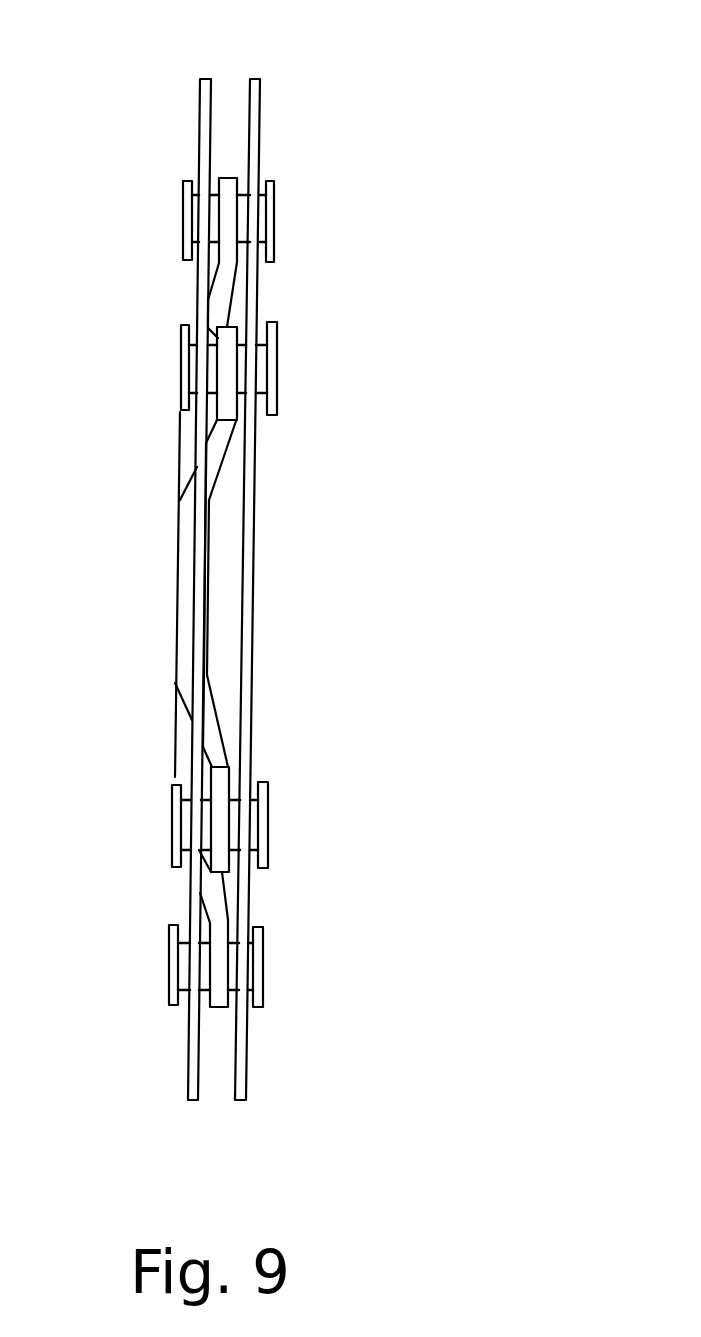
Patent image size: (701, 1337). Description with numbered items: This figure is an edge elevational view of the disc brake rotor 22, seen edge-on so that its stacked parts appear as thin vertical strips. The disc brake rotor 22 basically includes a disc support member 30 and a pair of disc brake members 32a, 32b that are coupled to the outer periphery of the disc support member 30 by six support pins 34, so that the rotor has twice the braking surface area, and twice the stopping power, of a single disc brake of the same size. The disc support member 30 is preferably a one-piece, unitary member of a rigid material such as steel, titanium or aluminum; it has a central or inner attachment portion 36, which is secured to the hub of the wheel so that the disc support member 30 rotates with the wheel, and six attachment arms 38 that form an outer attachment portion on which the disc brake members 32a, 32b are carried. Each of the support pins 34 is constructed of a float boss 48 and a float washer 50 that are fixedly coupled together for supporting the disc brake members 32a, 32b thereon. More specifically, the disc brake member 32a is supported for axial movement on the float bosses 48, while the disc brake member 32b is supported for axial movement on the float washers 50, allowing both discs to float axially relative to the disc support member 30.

The disc brake rotor 22 is at (447, 102).
The disc support member 30 is at (232, 172).
The disc brake member 32a is at (199, 120).
The disc brake member 32b is at (261, 99).
The support pin 34 is at (160, 213).
The inner attachment portion 36 is at (172, 708).
The attachment arm 38 is at (243, 214).
The float boss 48 is at (170, 935).
The float washer 50 is at (182, 332).